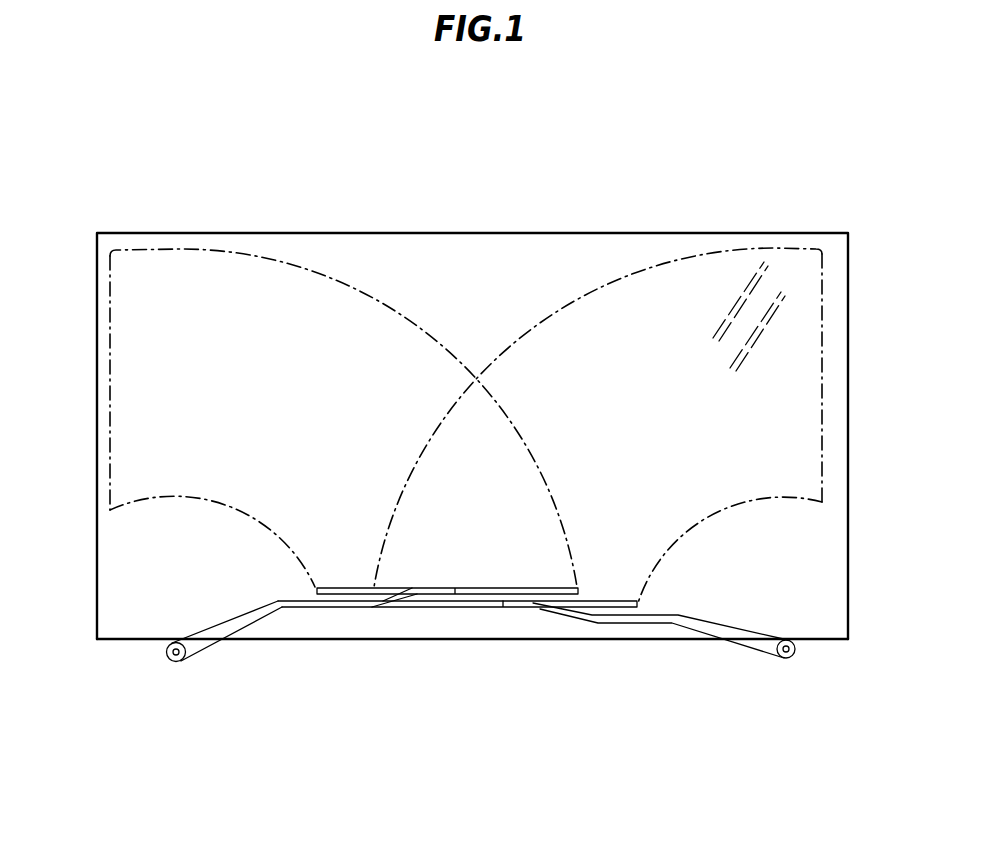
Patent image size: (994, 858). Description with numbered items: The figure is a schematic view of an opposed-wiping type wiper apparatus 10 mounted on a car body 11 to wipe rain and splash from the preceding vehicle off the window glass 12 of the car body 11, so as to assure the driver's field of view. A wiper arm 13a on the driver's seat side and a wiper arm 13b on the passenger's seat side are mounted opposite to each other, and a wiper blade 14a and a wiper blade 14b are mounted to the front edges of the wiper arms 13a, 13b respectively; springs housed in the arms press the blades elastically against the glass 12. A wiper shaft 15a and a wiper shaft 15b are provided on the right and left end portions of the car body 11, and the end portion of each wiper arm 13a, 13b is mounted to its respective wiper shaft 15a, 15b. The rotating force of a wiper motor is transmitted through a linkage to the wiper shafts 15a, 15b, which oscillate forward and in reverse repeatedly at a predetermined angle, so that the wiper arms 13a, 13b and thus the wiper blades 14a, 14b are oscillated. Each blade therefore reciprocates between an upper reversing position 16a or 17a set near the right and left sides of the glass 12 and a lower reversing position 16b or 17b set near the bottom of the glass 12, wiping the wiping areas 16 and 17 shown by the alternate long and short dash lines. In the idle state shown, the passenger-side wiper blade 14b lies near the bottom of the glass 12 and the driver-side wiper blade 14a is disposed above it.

The wiper apparatus 10 is at (523, 208).
The car body 11 is at (121, 651).
The window glass 12 is at (430, 248).
The wiper arm 13a is at (290, 608).
The wiper arm 13b is at (672, 622).
The wiper blade 14a is at (481, 587).
The wiper blade 14b is at (472, 608).
The wiper shaft 15a is at (176, 662).
The wiper shaft 15b is at (784, 659).
The wiping area 16 is at (199, 275).
The upper reversing position 16a is at (109, 345).
The lower reversing position 16b is at (432, 584).
The wiping area 17 is at (713, 270).
The upper reversing position 17a is at (823, 318).
The lower reversing position 17b is at (412, 610).